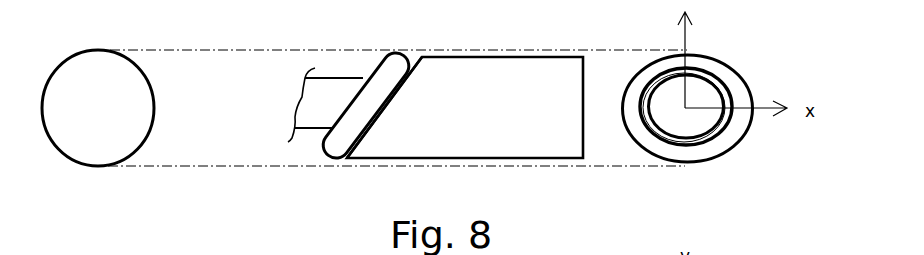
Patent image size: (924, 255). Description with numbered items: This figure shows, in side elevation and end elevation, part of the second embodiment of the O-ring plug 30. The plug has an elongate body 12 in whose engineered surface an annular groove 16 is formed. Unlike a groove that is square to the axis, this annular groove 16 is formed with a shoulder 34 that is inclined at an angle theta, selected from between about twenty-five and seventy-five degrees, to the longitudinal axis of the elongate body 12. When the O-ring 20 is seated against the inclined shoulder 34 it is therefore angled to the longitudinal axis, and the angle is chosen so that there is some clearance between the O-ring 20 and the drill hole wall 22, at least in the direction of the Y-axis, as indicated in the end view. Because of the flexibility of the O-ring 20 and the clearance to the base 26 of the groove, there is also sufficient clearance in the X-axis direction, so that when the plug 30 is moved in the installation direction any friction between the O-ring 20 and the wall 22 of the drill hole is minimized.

The elongate body 12 is at (540, 140).
The annular groove 16 is at (328, 57).
The O-ring 20 is at (322, 149).
The drill hole wall 22 is at (152, 126).
The base of the groove 26 is at (352, 78).
The O-ring plug 30 is at (637, 45).
The shoulder 34 is at (370, 122).